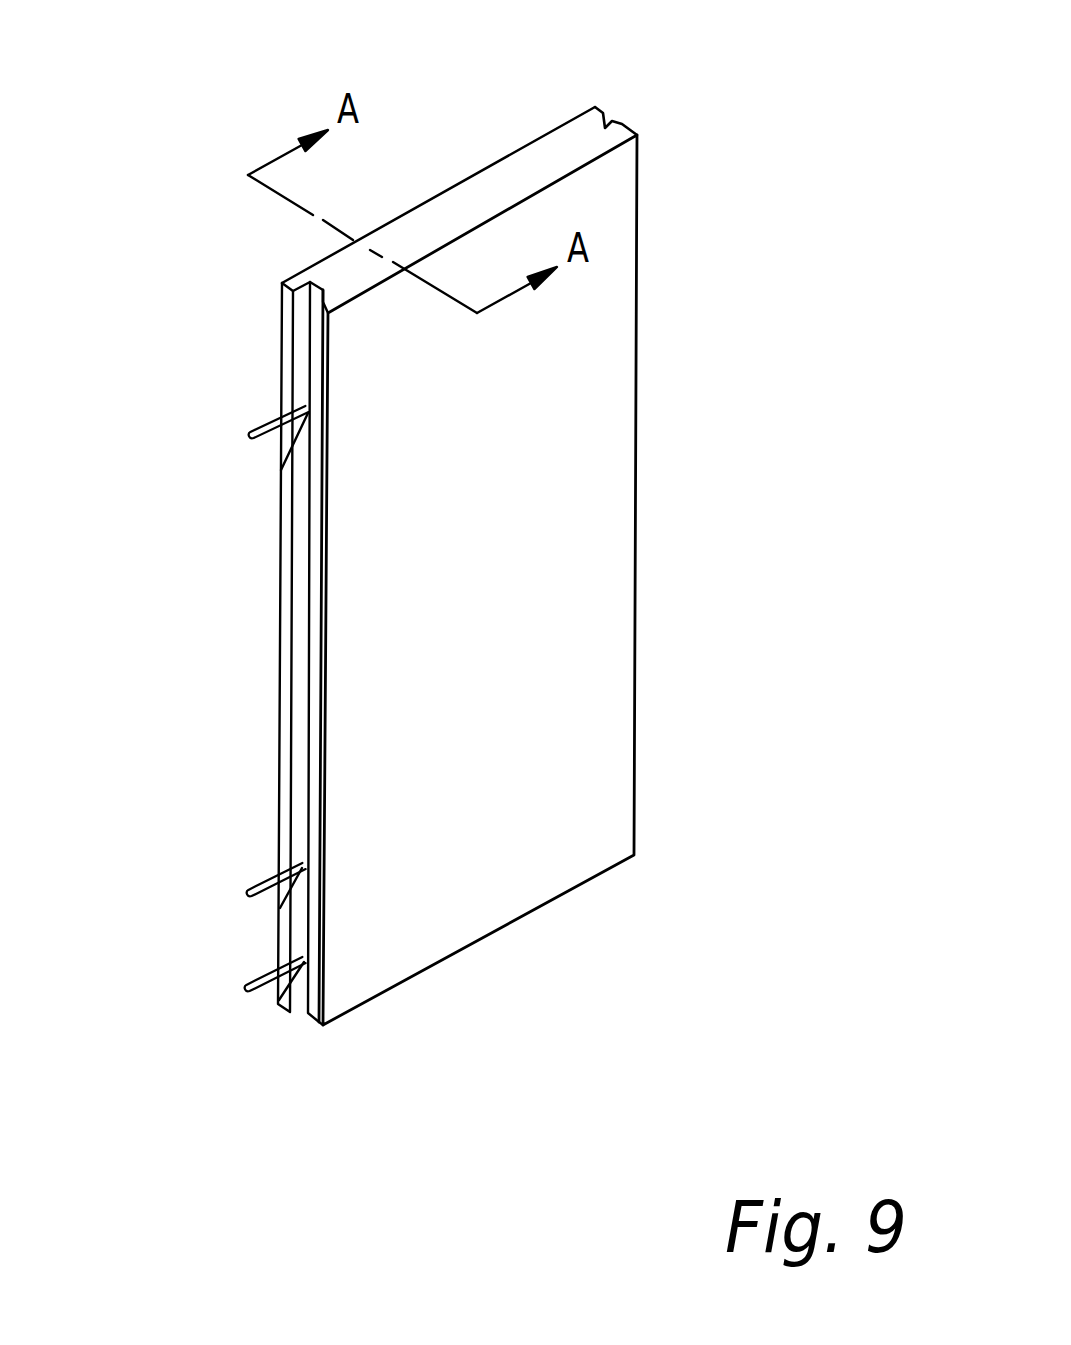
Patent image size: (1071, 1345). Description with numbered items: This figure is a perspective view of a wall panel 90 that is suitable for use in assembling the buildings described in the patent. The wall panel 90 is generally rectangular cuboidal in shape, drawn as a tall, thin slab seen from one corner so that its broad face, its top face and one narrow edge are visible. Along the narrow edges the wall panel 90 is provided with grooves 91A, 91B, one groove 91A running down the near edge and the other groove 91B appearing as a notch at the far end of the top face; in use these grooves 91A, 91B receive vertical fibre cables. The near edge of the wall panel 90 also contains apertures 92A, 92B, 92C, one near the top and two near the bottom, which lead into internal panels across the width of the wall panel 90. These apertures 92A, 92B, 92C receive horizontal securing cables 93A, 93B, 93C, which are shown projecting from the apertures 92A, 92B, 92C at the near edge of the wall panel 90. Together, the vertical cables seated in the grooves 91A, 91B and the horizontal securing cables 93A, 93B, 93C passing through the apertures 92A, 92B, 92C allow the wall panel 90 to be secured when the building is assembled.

The wall panel 90 is at (602, 755).
The groove 91A is at (303, 320).
The groove 91B is at (612, 121).
The aperture 92A is at (293, 447).
The aperture 92B is at (302, 860).
The aperture 92C is at (281, 1000).
The horizontal securing cable 93A is at (252, 430).
The horizontal securing cable 93B is at (250, 893).
The horizontal securing cable 93C is at (248, 988).